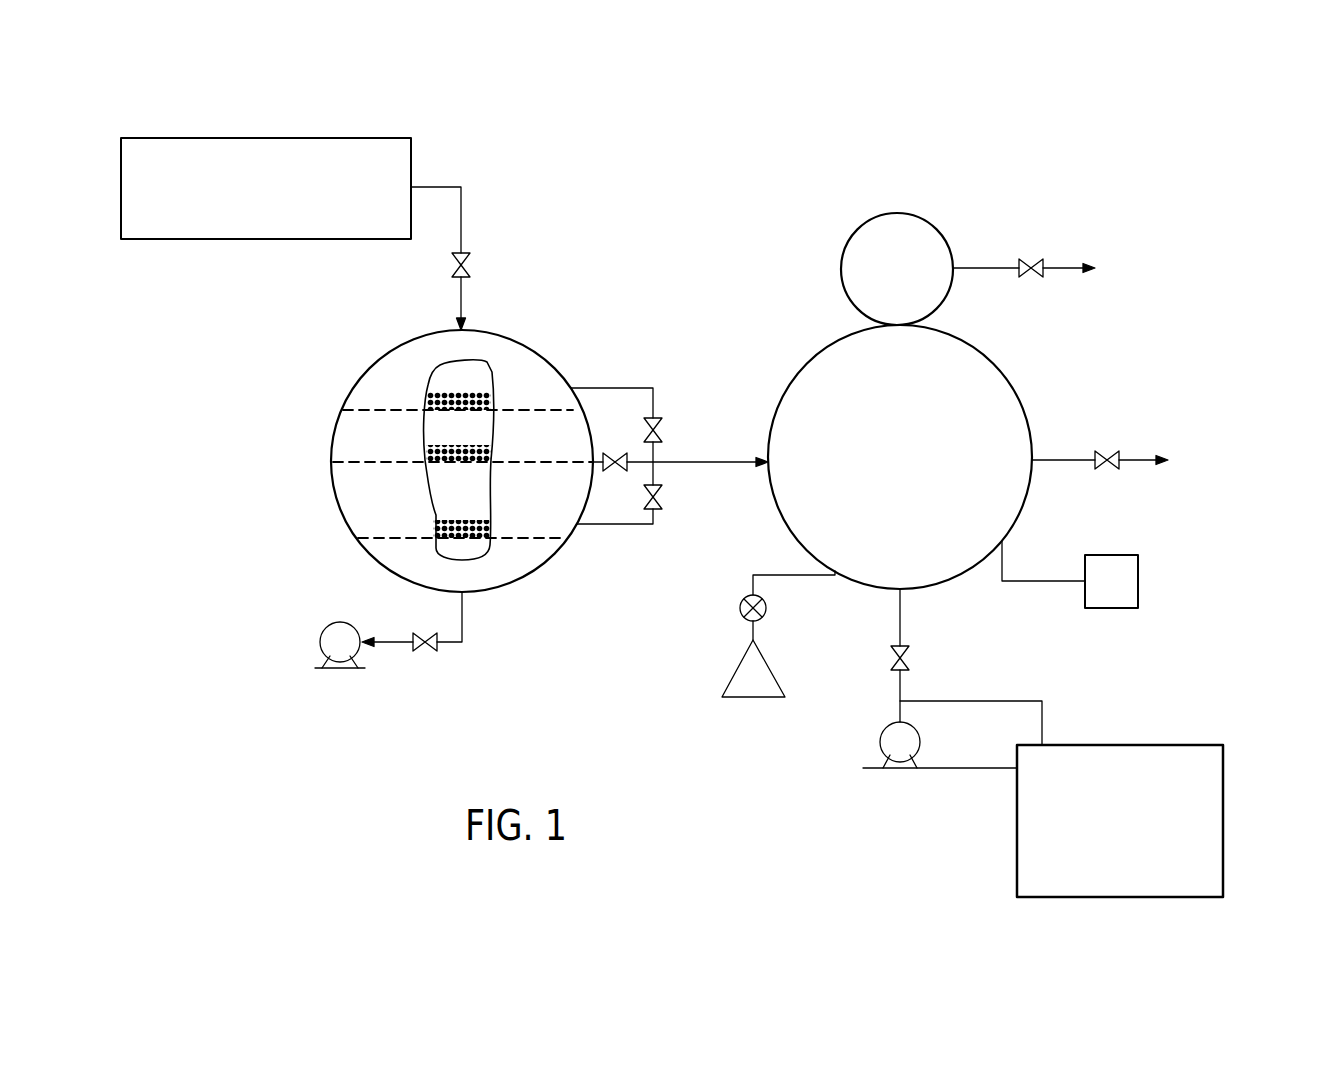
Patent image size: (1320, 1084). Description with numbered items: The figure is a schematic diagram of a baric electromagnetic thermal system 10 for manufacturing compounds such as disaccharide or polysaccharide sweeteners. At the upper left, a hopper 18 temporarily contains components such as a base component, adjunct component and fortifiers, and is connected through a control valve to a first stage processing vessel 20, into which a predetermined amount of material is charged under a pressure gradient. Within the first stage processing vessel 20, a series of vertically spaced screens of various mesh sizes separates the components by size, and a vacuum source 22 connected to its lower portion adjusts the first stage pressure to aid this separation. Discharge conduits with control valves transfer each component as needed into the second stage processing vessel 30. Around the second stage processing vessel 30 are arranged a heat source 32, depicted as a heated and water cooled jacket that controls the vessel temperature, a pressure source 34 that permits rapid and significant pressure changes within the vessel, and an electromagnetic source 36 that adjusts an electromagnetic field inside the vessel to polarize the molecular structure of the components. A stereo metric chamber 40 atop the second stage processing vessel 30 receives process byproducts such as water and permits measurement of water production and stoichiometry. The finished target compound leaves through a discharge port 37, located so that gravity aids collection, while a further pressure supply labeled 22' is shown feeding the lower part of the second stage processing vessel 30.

The baric electromagnetic thermal system 10 is at (700, 215).
The hopper 18 is at (263, 138).
The first stage processing vessel 20 is at (505, 332).
The vacuum source 22 is at (323, 652).
The pressure source 22' is at (932, 750).
The second stage processing vessel 30 is at (1000, 371).
The heat source 32 is at (733, 680).
The pressure source 34 is at (1060, 745).
The electromagnetic source 36 is at (1140, 562).
The discharge port 37 is at (1035, 458).
The stereo metric chamber 40 is at (930, 218).